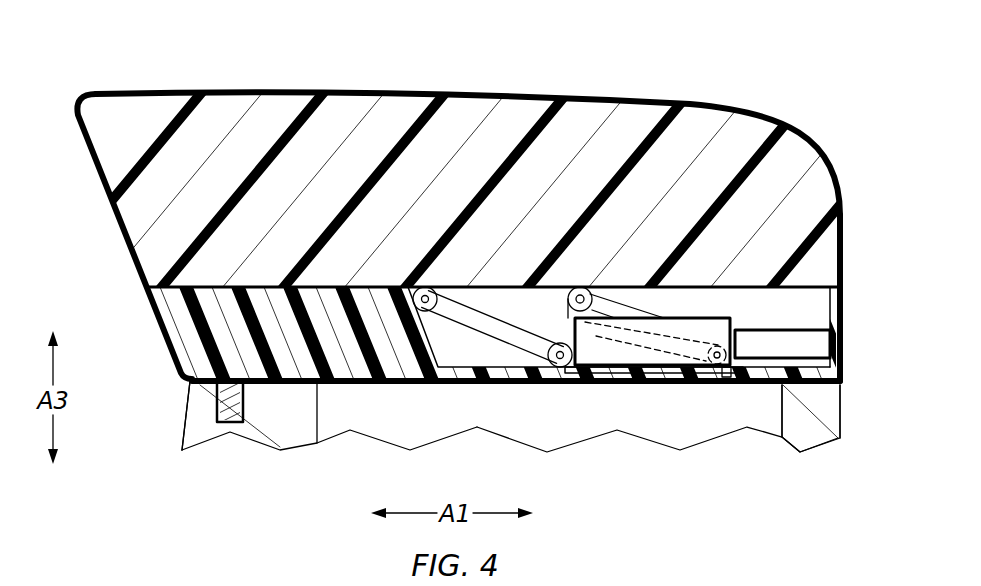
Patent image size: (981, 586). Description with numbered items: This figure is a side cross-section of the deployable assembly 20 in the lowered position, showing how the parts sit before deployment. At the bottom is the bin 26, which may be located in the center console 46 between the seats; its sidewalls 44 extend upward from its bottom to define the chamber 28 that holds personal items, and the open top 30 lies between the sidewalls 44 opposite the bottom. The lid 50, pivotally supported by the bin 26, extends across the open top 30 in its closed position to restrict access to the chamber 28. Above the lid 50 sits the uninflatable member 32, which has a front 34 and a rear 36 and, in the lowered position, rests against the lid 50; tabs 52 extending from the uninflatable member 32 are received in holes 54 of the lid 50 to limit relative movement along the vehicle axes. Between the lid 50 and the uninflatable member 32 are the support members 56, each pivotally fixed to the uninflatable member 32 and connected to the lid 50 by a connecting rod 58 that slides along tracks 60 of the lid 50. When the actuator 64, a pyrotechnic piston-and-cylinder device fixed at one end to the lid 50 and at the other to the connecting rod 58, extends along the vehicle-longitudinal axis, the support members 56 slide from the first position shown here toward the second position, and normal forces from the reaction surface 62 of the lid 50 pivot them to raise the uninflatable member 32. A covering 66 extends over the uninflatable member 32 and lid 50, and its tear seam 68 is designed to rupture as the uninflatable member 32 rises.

The deployable assembly 20 is at (741, 44).
The bin 26 is at (441, 425).
The chamber 28 is at (542, 425).
The open top 30 is at (755, 397).
The uninflatable member 32 is at (793, 160).
The front 34 is at (117, 227).
The rear 36 is at (846, 254).
The sidewalls 44 is at (322, 422).
The center console 46 is at (190, 422).
The lid 50 is at (187, 323).
The tabs 52 is at (230, 422).
The holes 54 is at (217, 415).
The support members 56 is at (460, 297).
The connecting rod 58 is at (627, 355).
The tracks 60 is at (642, 386).
The reaction surface 62 is at (430, 340).
The actuator 64 is at (199, 92).
The covering 66 is at (843, 318).
The tear seam 68 is at (147, 288).